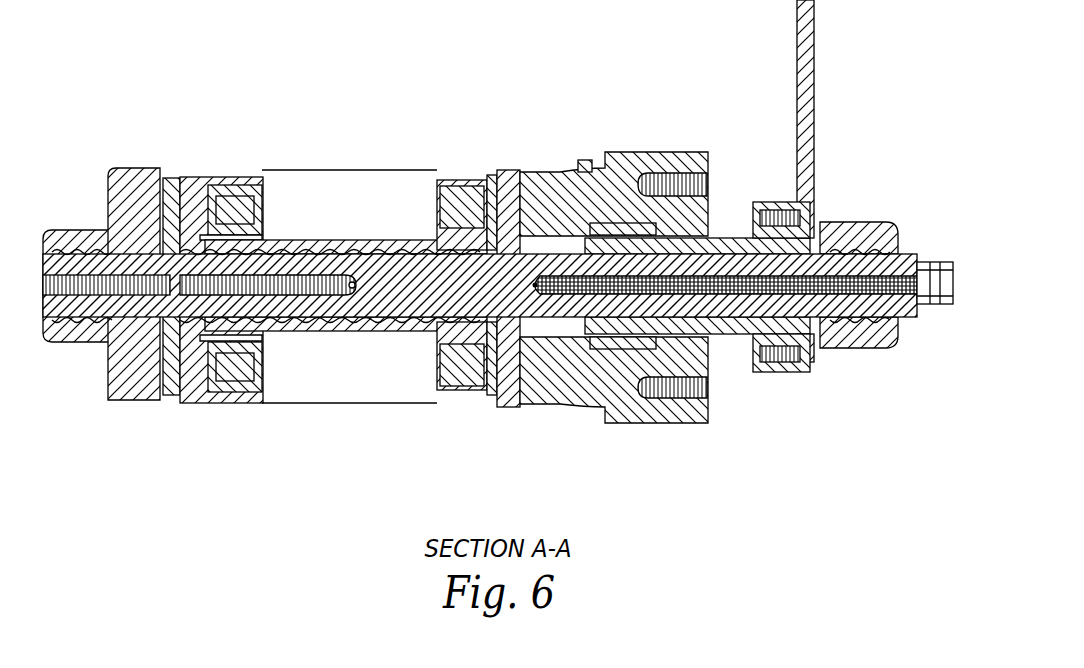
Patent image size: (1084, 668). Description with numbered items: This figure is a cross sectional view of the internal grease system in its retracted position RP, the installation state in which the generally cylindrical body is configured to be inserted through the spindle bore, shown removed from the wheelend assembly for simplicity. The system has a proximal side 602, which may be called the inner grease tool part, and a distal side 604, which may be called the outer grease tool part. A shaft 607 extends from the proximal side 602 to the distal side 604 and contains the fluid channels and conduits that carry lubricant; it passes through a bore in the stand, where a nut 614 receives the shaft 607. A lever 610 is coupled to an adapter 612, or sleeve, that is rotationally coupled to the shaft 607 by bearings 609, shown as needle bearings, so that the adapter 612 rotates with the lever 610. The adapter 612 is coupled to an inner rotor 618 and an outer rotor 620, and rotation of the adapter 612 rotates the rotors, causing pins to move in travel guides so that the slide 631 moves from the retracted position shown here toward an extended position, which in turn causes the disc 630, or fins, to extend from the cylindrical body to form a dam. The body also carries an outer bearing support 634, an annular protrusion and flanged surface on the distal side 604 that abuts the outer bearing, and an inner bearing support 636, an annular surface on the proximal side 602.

The proximal side 602 is at (637, 340).
The distal side 604 is at (143, 542).
The shaft 607 is at (912, 256).
The bearings 609 is at (462, 186).
The lever 610 is at (790, 38).
The adapter 612 is at (778, 204).
The nut 614 is at (858, 348).
The inner rotor 618 is at (509, 409).
The outer rotor 620 is at (207, 170).
The disc 630 is at (505, 176).
The slide 631 is at (262, 166).
The outer bearing support 634 is at (226, 393).
The inner bearing support 636 is at (615, 152).
The retracted position RP is at (134, 76).